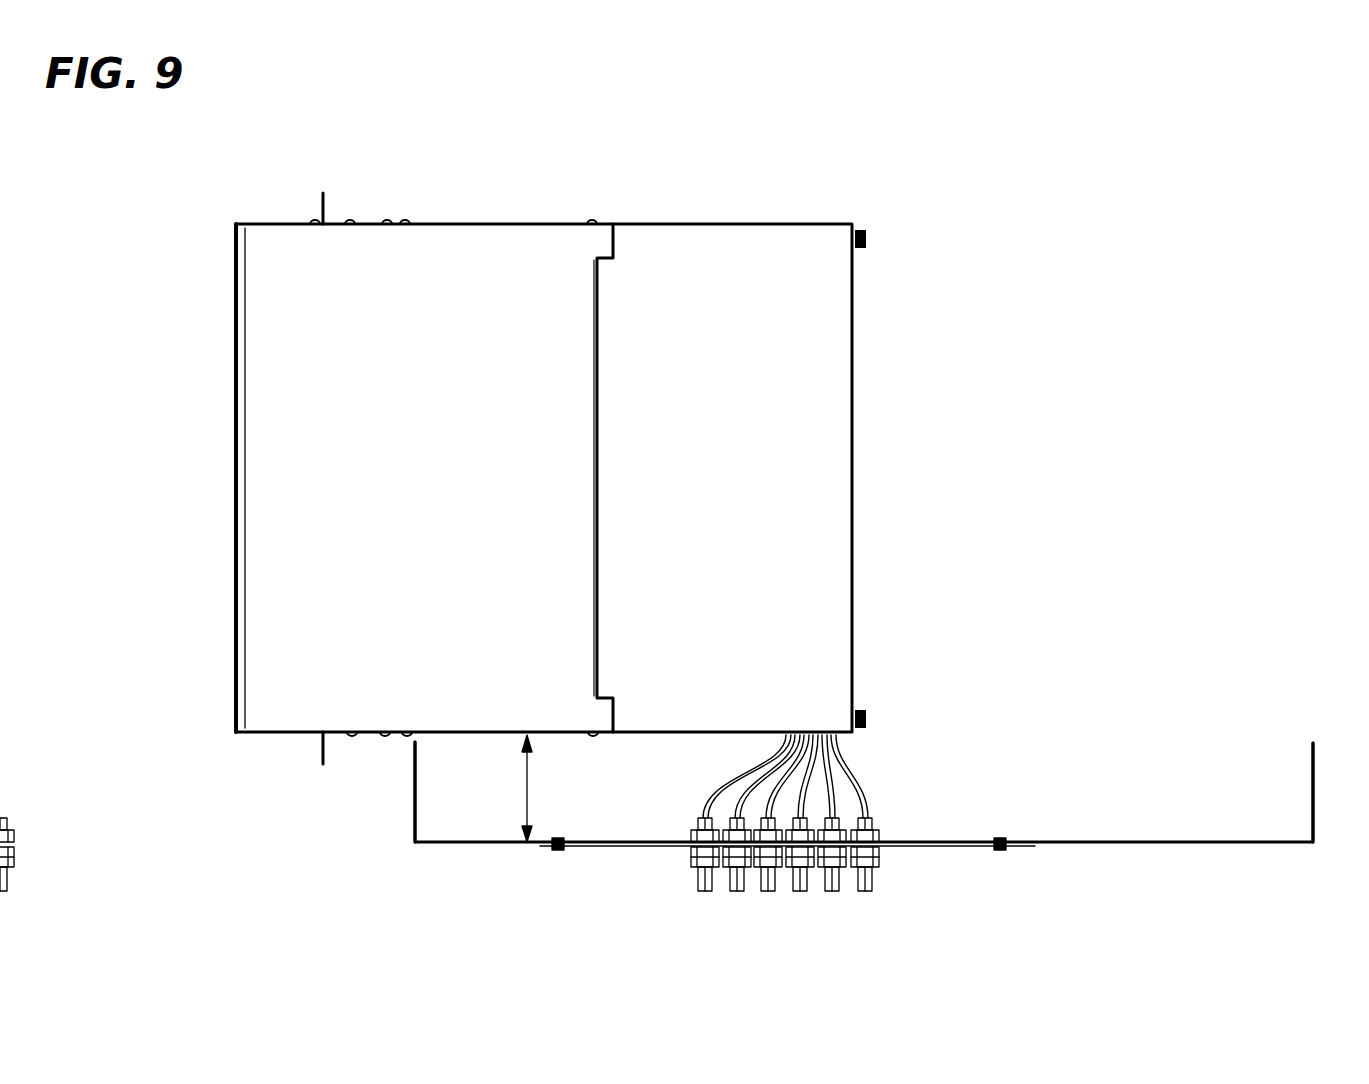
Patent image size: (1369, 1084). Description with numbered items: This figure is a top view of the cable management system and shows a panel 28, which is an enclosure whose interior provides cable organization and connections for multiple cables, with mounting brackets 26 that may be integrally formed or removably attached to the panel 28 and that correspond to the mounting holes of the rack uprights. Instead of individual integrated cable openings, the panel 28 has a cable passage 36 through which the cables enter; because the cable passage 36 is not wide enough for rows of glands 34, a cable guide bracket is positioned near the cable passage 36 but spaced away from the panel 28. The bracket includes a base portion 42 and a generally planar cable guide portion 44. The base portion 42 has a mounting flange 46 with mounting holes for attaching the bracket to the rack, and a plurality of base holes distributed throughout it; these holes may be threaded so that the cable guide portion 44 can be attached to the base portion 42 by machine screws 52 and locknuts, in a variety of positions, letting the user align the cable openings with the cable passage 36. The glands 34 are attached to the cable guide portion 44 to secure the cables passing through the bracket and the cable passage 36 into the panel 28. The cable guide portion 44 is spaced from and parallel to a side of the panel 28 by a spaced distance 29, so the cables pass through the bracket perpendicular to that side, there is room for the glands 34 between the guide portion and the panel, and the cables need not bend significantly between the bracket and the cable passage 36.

The mounting bracket 26 is at (325, 206).
The panel 28 is at (815, 383).
The spaced distance 29 is at (527, 776).
The gland 34 is at (742, 878).
The cable passage 36 is at (715, 790).
The base portion 42 is at (468, 845).
The cable guide portion 44 is at (630, 848).
The mounting flange 46 is at (412, 787).
The machine screw 52 is at (1005, 848).